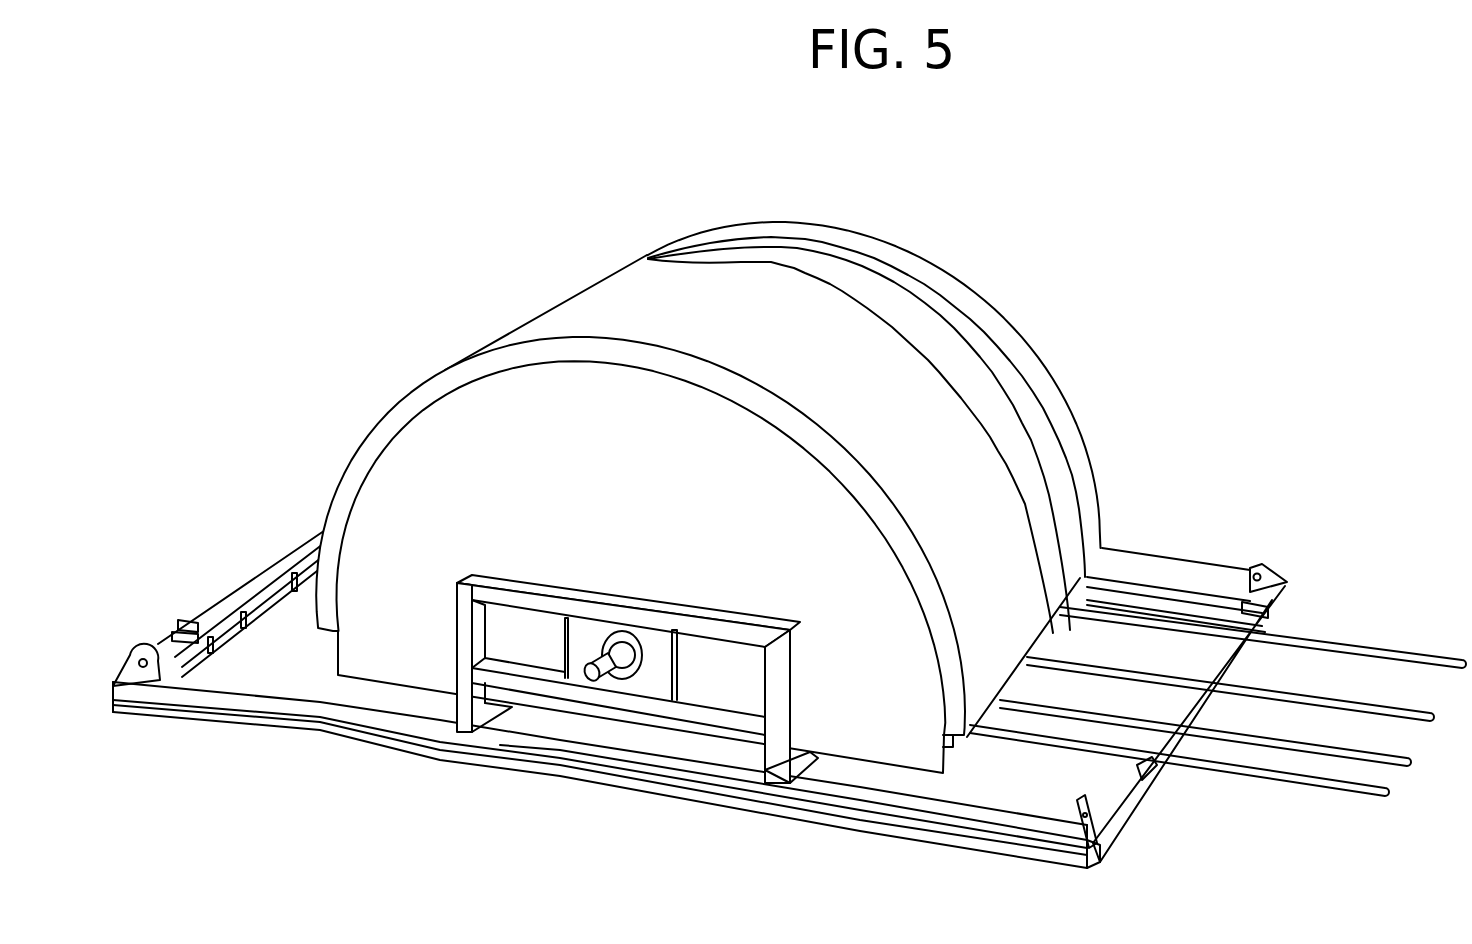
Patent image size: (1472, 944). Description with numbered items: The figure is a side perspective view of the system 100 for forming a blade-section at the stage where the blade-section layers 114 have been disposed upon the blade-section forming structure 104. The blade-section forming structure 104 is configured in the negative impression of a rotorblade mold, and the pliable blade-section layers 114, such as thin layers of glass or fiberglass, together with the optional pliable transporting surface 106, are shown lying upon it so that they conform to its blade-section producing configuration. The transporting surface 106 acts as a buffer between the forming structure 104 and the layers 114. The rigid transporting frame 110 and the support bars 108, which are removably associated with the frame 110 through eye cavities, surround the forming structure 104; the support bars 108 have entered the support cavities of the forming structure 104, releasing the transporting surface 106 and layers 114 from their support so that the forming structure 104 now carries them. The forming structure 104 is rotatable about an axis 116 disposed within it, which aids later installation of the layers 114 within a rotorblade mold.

The system for forming a blade-section 100 is at (700, 480).
The blade-section forming structure 104 is at (458, 459).
The transporting surface 106 is at (1012, 320).
The support bars 108 is at (1360, 703).
The transporting frame 110 is at (1202, 578).
The blade-section layer 114 is at (633, 307).
The axis 116 is at (590, 677).